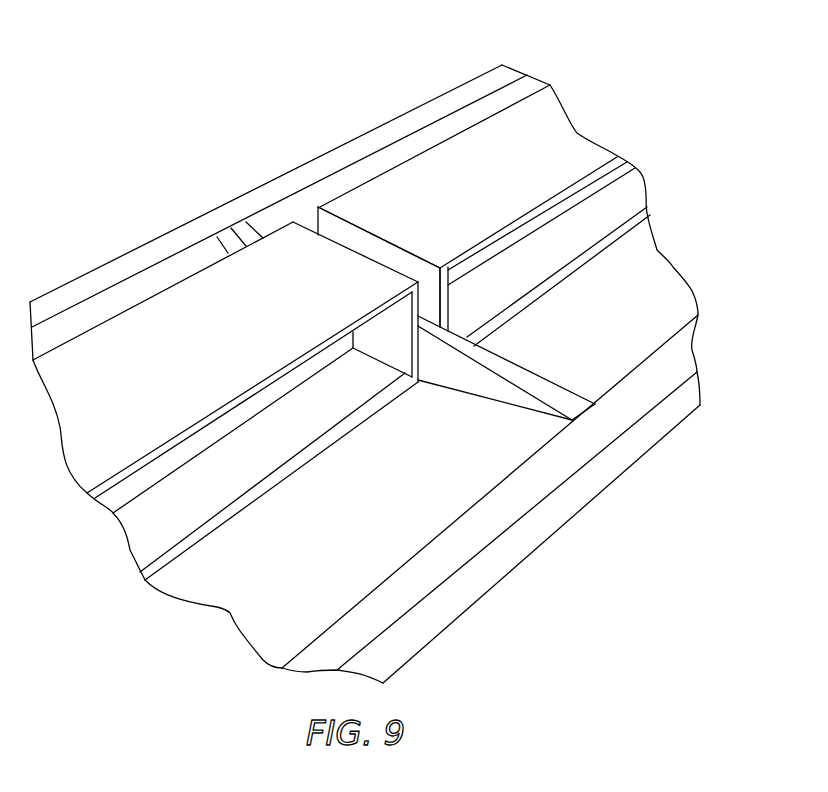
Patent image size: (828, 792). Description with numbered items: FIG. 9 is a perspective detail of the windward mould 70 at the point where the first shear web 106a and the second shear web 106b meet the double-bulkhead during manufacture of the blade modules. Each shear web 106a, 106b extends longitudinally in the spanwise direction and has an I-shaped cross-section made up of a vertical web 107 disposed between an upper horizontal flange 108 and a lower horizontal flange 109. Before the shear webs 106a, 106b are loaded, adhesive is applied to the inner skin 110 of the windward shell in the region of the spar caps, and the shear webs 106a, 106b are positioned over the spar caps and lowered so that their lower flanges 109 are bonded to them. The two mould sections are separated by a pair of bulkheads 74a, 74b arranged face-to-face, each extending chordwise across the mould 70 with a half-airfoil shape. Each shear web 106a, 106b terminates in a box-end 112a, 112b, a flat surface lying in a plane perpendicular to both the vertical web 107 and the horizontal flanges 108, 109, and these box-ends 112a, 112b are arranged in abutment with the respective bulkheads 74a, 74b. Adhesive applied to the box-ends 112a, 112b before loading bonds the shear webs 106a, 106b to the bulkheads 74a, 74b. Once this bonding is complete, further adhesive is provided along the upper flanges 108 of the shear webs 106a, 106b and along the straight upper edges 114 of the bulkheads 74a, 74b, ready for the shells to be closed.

The mould 70 is at (262, 150).
The bulkhead 74a is at (503, 395).
The bulkhead 74b is at (557, 380).
The first shear web 106a is at (136, 326).
The second shear web 106b is at (431, 170).
The vertical web 107 is at (215, 433).
The upper horizontal flange 108 is at (193, 290).
The lower horizontal flange 109 is at (560, 257).
The inner skin 110 is at (515, 478).
The box-end 112a is at (380, 347).
The box-end 112b is at (405, 260).
The straight upper edge 114 is at (517, 385).